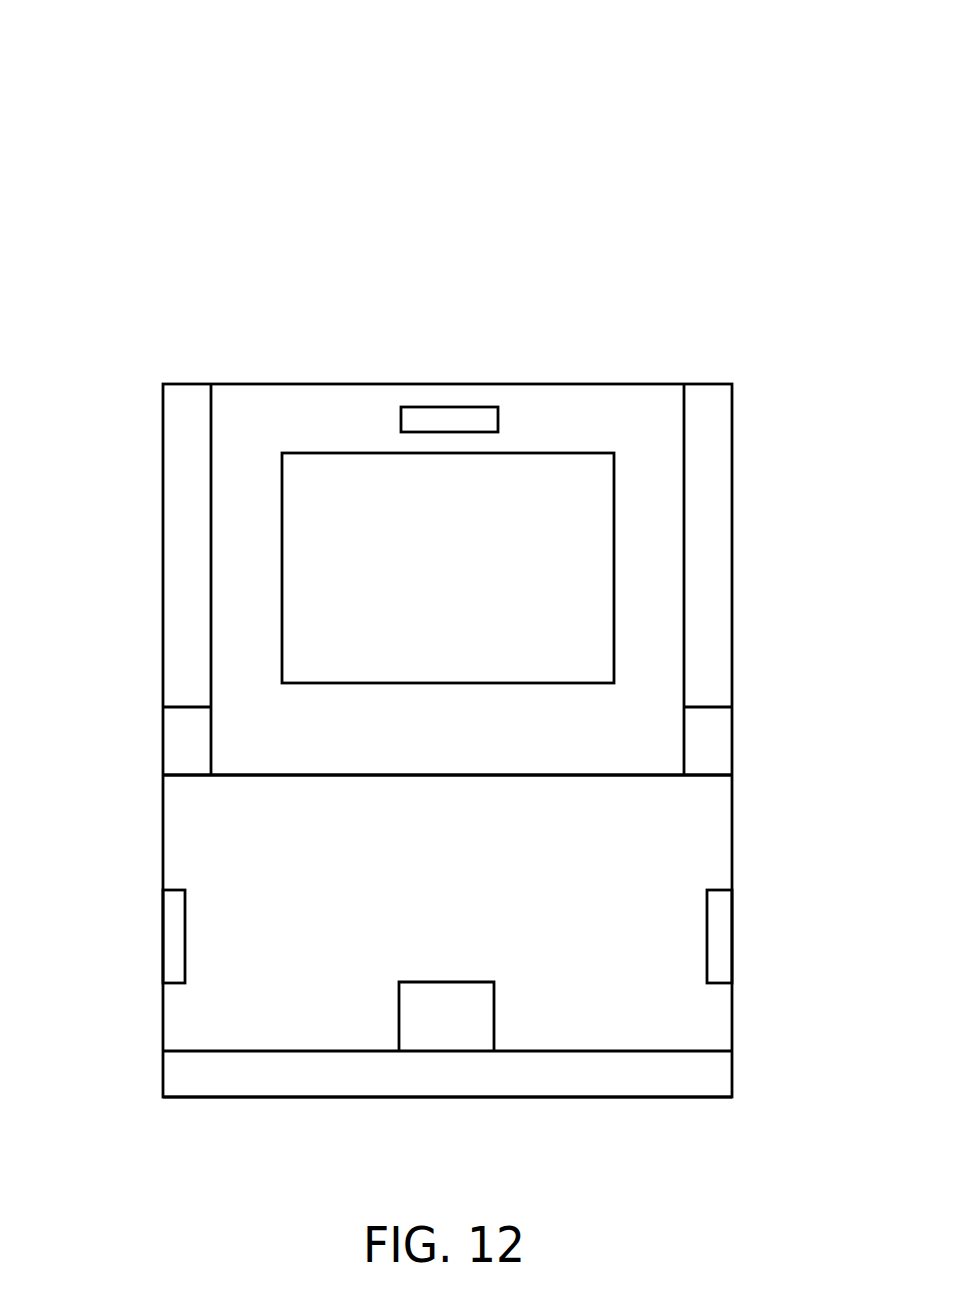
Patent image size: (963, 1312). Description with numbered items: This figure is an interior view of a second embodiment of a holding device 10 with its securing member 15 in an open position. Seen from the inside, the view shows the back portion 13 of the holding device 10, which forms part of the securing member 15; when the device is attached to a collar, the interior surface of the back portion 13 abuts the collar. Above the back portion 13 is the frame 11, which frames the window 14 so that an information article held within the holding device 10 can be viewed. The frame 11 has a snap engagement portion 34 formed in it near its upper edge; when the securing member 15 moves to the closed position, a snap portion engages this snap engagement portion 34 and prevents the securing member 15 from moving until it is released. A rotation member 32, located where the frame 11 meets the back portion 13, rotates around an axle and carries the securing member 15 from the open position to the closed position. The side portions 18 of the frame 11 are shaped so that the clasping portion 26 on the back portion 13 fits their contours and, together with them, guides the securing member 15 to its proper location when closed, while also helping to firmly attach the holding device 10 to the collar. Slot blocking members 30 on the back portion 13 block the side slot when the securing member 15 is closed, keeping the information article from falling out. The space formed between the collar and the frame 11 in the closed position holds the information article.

The holding device 10 is at (102, 208).
The frame 11 is at (281, 407).
The back portion 13 is at (332, 923).
The window 14 is at (340, 535).
The securing member 15 is at (777, 1015).
The side portions 18 is at (722, 436).
The clasping portion 26 is at (430, 1020).
The slot blocking member 30 is at (172, 947).
The rotation member 32 is at (183, 743).
The snap engagement portion 34 is at (425, 407).